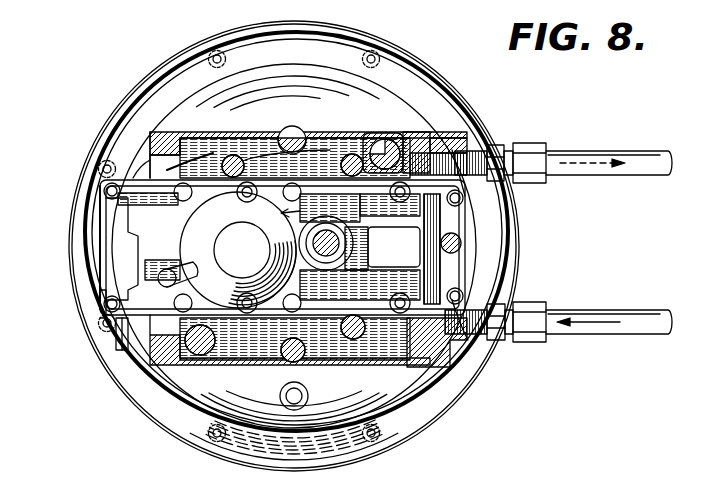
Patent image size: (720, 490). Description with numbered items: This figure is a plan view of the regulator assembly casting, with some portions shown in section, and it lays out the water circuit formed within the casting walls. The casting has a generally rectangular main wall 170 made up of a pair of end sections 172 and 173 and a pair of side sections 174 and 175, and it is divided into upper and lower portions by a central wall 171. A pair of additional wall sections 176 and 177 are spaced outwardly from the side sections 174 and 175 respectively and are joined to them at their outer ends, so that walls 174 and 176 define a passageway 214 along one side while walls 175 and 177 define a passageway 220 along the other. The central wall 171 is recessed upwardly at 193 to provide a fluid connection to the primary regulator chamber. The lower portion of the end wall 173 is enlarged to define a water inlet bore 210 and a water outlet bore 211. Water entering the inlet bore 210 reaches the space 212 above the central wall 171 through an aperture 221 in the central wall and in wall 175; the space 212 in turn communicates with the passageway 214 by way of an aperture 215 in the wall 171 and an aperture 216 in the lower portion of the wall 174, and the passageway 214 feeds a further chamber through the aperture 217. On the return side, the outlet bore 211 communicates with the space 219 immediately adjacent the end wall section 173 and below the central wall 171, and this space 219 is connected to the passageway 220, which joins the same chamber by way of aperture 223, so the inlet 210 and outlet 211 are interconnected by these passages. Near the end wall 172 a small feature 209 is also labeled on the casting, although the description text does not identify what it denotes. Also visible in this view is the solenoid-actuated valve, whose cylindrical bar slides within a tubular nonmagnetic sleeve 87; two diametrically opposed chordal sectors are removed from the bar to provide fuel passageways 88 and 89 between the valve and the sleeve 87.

The sleeve 87 is at (320, 268).
The fuel passageway 88 is at (347, 262).
The fuel passageway 89 is at (262, 253).
The main wall 170 is at (102, 215).
The central wall 171 is at (170, 248).
The end section 172 is at (100, 285).
The end section 173 is at (470, 198).
The side section 174 is at (262, 178).
The side section 175 is at (135, 340).
The additional wall section 176 is at (331, 132).
The additional wall section 177 is at (407, 364).
The recess 193 is at (178, 260).
The lug 209 is at (118, 345).
The water inlet bore 210 is at (482, 338).
The water outlet bore 211 is at (487, 148).
The space 212 is at (358, 209).
The passageway 214 is at (242, 158).
The aperture 215 is at (133, 180).
The aperture 216 is at (157, 178).
The aperture 217 is at (388, 142).
The space 219 is at (445, 225).
The passageway 220 is at (323, 346).
The aperture 221 is at (458, 292).
The aperture 223 is at (207, 356).